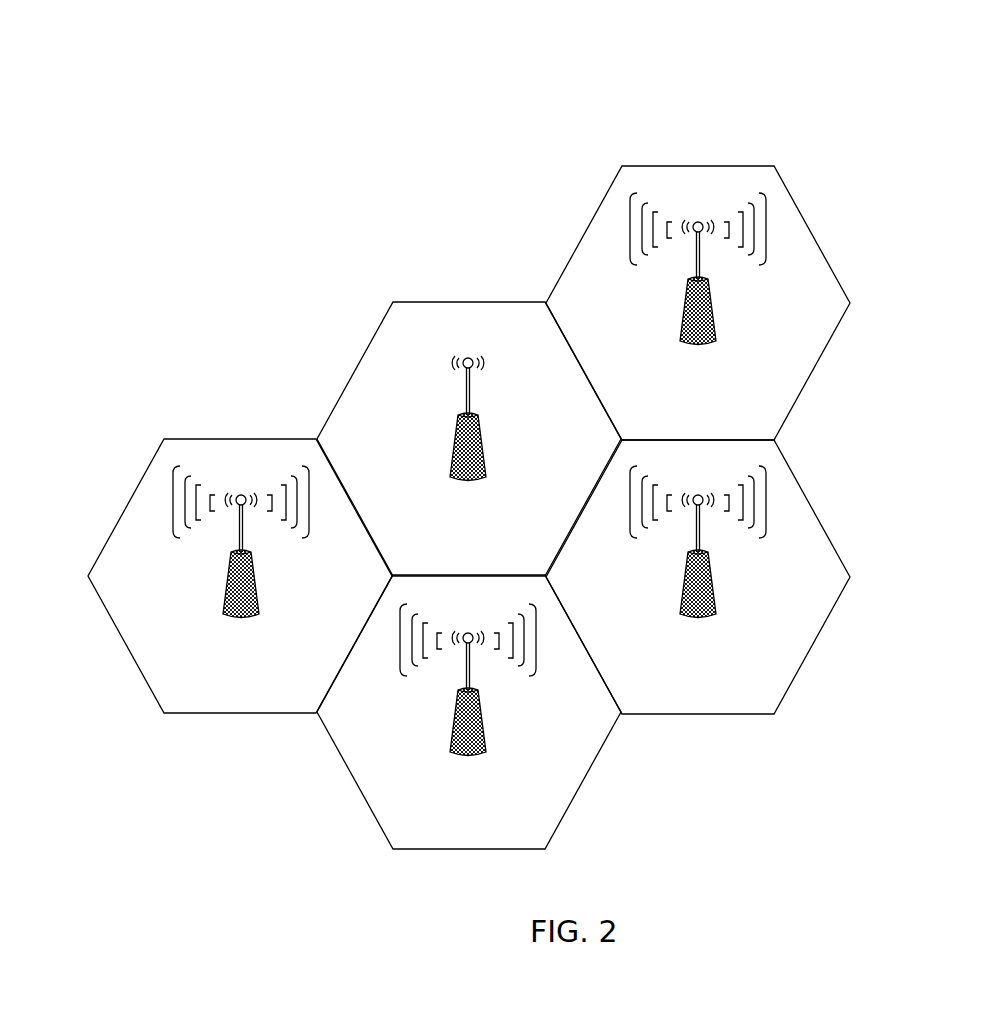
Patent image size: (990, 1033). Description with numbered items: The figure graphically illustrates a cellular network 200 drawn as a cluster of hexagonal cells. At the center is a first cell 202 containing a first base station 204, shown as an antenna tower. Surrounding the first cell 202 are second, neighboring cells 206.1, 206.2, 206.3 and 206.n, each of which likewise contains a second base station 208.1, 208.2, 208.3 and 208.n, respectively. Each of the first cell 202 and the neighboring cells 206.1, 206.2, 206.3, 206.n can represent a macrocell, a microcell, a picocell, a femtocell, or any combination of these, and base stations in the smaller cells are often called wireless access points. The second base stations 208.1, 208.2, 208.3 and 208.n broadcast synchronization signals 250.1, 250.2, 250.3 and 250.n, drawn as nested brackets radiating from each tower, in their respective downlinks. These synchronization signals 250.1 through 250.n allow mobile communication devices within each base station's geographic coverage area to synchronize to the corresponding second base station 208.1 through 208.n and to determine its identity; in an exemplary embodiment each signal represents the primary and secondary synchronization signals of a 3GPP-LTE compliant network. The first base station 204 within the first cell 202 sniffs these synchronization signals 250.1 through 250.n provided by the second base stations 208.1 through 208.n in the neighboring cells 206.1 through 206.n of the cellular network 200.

The cellular network 200 is at (903, 108).
The first cell 202 is at (460, 302).
The first base station 204 is at (492, 343).
The second, neighboring cell 206.1 is at (700, 166).
The second, neighboring cell 206.2 is at (851, 578).
The second, neighboring cell 206.3 is at (583, 783).
The second, neighboring cell 206.n is at (262, 439).
The second base station 208.1 is at (717, 291).
The second base station 208.2 is at (720, 568).
The second base station 208.3 is at (487, 703).
The second base station 208.n is at (262, 557).
The synchronization signal 250.1 is at (634, 190).
The synchronization signal 250.2 is at (653, 455).
The synchronization signal 250.3 is at (415, 592).
The synchronization signal 250.n is at (178, 462).